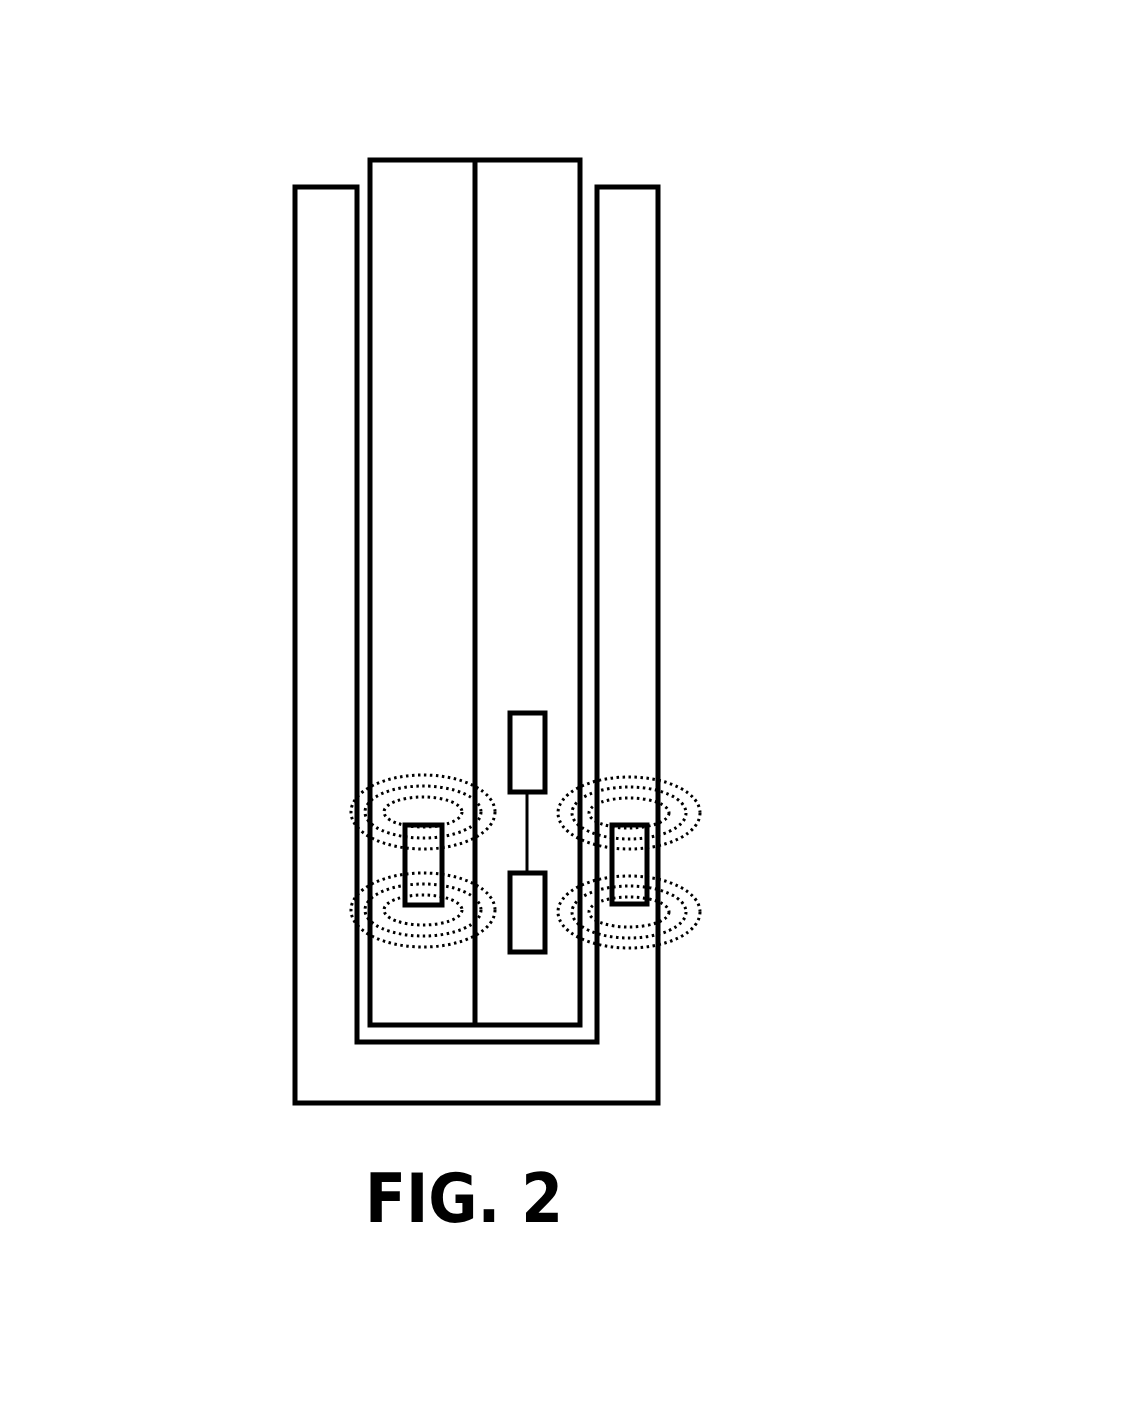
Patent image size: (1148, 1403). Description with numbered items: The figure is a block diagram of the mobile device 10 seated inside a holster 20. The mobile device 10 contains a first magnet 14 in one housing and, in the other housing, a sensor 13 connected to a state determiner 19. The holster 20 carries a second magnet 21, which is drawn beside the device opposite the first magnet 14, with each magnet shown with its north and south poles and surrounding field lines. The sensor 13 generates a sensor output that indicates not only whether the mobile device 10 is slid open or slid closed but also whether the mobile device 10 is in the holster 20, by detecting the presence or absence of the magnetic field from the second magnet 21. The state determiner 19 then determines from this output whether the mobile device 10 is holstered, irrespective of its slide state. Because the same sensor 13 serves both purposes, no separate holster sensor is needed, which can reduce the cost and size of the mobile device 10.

The mobile device 10 is at (503, 158).
The holster 20 is at (305, 262).
The state determiner 19 is at (527, 735).
The sensor 13 is at (527, 920).
The first magnet 14 is at (420, 848).
The second magnet 21 is at (633, 848).